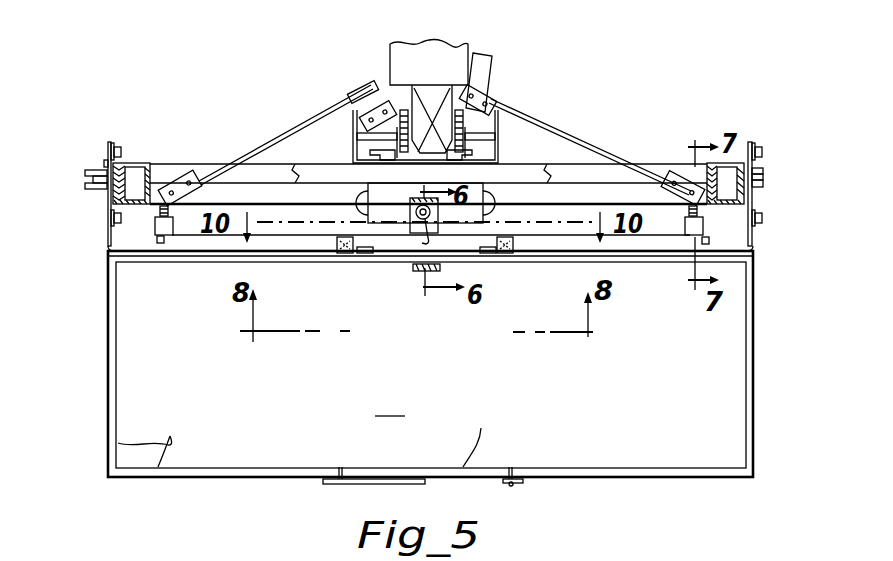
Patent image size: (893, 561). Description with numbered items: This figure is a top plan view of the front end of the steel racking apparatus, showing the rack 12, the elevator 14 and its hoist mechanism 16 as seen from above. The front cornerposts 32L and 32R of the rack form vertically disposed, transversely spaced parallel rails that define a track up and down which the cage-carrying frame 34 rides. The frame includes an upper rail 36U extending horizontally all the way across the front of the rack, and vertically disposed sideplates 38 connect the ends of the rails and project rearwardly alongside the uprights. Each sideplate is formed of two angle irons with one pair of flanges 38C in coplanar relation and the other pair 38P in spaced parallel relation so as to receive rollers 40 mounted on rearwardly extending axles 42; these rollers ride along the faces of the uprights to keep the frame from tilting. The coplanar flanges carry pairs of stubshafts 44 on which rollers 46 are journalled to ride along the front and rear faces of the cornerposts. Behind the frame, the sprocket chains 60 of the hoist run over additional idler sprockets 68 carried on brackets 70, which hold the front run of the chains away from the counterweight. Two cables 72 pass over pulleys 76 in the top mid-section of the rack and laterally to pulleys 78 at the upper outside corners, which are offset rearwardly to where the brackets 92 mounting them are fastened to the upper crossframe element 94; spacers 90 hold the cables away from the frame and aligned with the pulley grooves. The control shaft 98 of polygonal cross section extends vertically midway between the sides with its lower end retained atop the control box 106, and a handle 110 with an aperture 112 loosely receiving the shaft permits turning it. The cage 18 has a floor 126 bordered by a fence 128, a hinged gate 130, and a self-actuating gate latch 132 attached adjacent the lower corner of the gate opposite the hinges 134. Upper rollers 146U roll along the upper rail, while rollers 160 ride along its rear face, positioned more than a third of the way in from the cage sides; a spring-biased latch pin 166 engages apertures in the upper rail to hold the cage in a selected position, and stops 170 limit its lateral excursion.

The rack 12 is at (157, 140).
The elevator 14 is at (790, 292).
The hoist mechanism 16 is at (495, 72).
The elevator cage 18 is at (745, 402).
The left cornerpost 32L is at (157, 163).
The right cornerpost 32R is at (707, 168).
The cage-carrying frame 34 is at (72, 215).
The upper rail 36U is at (184, 252).
The sideplates 38 is at (106, 236).
The coplanar flanges 38C is at (109, 152).
The parallel flanges 38P is at (88, 172).
The rollers 40 is at (87, 182).
The axles 42 is at (104, 166).
The stubshafts 44 is at (123, 162).
The rollers 46 is at (116, 146).
The sprocket chains 60 is at (432, 100).
The idler sprockets 68 is at (392, 134).
The brackets 70 is at (485, 158).
The cables 72 is at (303, 125).
The pulleys 76 is at (357, 92).
The pulleys 78 is at (198, 204).
The spacers 90 is at (178, 232).
The brackets 92 is at (198, 180).
The upper crossframe element 94 is at (574, 178).
The shaft 98 is at (425, 225).
The control box 106 is at (368, 220).
The handle 110 is at (437, 276).
The aperture 112 is at (420, 226).
The floor 126 is at (390, 405).
The fence 128 is at (154, 440).
The hinged gate 130 is at (486, 437).
The gate latch 132 is at (357, 484).
The hinges 134 is at (520, 485).
The upper rollers 146U is at (363, 256).
The rollers 160 is at (338, 253).
The latch pin 166 is at (416, 273).
The stops 170 is at (158, 243).